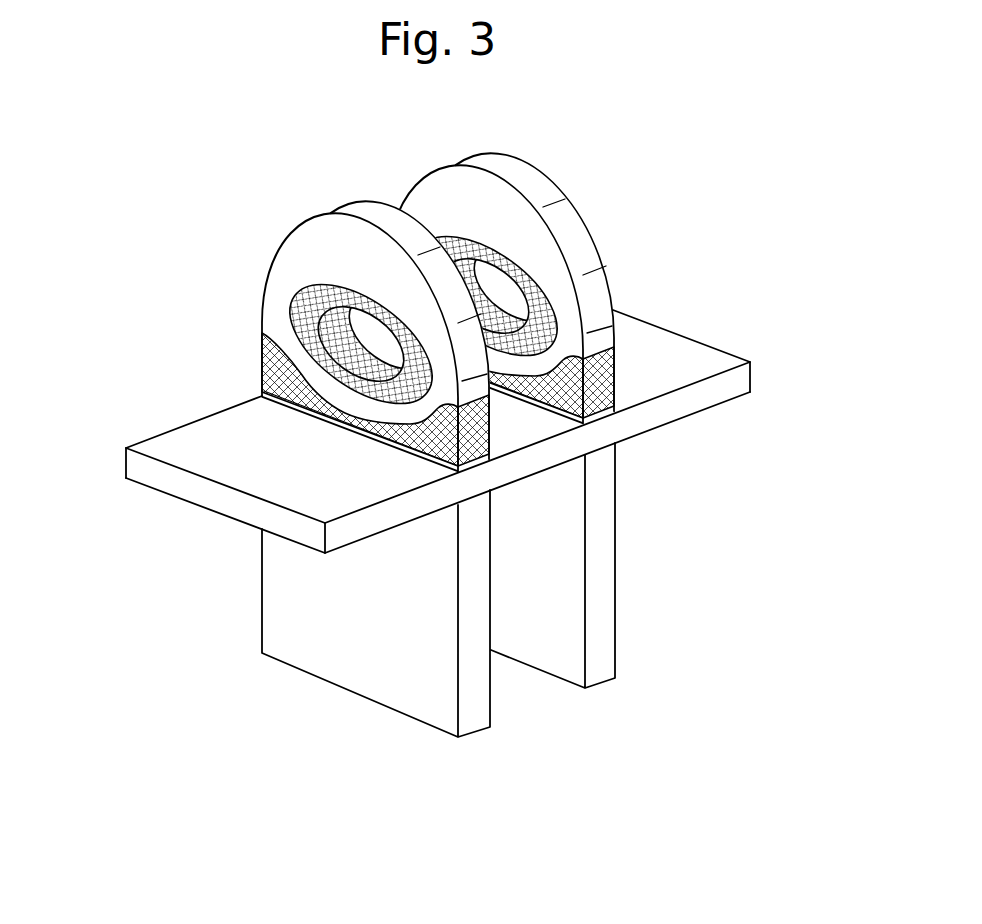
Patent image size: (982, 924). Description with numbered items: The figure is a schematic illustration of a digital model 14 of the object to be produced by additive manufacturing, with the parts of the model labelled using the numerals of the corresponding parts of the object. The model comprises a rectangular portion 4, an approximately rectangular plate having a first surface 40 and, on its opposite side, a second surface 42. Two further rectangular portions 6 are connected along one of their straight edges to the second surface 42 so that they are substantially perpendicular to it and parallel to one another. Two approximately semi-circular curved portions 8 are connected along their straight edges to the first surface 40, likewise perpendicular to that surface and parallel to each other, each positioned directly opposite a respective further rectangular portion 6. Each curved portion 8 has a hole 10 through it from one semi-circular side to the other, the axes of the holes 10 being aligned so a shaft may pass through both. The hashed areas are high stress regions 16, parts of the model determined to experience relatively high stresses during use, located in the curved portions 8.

The rectangular portion 4 is at (442, 455).
The further rectangular portions 6 is at (478, 718).
The curved portions 8 is at (305, 242).
The hole 10 is at (383, 297).
The digital model 14 is at (462, 450).
The high stress regions 16 is at (305, 308).
The first surface 40 is at (277, 472).
The second surface 42 is at (361, 545).